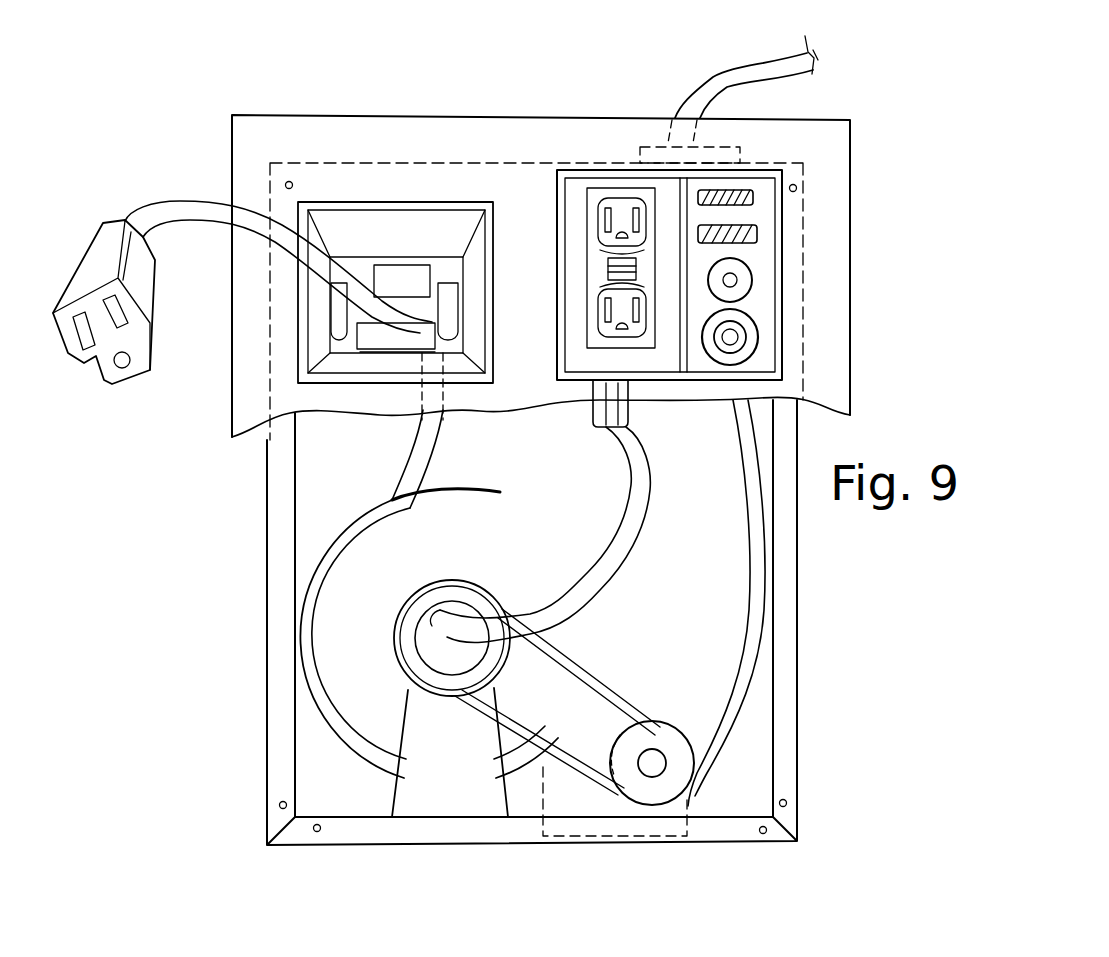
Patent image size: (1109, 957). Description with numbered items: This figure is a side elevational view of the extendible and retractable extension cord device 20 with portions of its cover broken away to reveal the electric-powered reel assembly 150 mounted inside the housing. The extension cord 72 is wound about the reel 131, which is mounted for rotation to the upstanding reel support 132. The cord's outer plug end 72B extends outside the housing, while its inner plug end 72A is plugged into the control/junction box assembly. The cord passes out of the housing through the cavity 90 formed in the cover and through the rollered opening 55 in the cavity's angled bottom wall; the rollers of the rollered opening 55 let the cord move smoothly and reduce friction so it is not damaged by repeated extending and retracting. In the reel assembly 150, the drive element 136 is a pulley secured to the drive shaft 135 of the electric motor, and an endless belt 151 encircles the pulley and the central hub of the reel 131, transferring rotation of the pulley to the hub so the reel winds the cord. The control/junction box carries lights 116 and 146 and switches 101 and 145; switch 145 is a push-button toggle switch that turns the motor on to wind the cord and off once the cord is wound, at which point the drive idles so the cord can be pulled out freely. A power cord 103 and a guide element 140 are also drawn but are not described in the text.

The extendible and retractable extension cord device 20 is at (230, 550).
The extension cord 72 is at (193, 205).
The outer plug end 72B is at (105, 372).
The inner plug end 72A is at (628, 415).
The cavity 90 is at (418, 217).
The rollered opening 55 is at (438, 296).
The power cord 103 is at (627, 117).
The light 116 is at (755, 196).
The light 146 is at (758, 235).
The switch 101 is at (752, 283).
The switch 145 is at (758, 341).
The electric-powered reel assembly 150 is at (594, 585).
The reel 131 is at (505, 530).
The reel support 132 is at (422, 780).
The endless belt 151 is at (620, 642).
The drive shaft 135 is at (655, 750).
The drive element 136 is at (675, 760).
The cord guide arc 140 is at (758, 570).